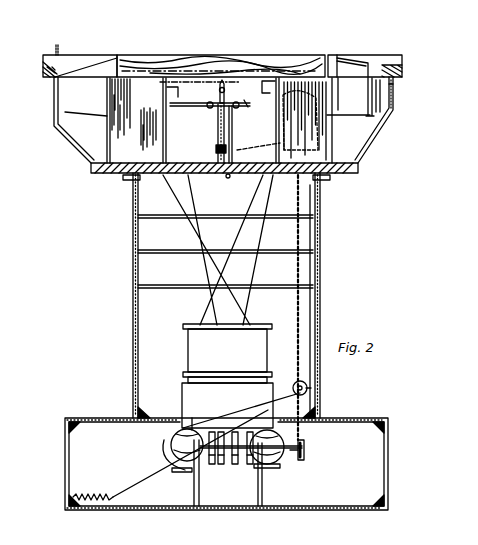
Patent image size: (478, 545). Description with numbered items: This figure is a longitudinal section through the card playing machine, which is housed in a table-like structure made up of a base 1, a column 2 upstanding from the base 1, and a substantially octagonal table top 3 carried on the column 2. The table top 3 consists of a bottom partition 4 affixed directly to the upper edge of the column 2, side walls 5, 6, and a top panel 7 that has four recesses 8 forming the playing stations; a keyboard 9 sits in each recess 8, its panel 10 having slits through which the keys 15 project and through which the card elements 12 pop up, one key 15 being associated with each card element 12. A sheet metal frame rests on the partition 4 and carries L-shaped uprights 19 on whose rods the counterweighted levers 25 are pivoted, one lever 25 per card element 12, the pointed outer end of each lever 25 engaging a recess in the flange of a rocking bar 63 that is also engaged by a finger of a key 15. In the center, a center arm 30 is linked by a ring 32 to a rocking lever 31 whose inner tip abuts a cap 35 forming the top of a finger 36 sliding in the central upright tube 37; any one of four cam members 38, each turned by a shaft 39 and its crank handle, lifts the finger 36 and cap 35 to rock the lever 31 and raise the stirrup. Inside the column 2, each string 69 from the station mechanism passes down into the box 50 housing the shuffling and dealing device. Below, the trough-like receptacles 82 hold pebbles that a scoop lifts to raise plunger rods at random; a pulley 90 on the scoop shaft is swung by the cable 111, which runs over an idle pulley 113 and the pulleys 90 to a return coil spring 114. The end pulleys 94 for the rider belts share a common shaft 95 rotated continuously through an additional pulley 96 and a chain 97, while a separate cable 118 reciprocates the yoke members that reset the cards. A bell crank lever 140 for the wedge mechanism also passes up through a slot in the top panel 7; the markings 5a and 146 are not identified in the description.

The base 1 is at (390, 458).
The column 2 is at (322, 262).
The table top 3 is at (403, 103).
The bottom partition 4 is at (352, 176).
The side wall 5 is at (373, 147).
The partition 5a is at (258, 140).
The side wall 6 is at (394, 92).
The top panel 7 is at (305, 55).
The recess 8 is at (386, 54).
The keyboard 9 is at (368, 60).
The panel 10 is at (346, 56).
The card element 12 is at (340, 65).
The key 15 is at (393, 77).
The upright 19 is at (160, 125).
The lever 25 is at (84, 113).
The center arm 30 is at (282, 77).
The rocking lever 31 is at (240, 82).
The ring 32 is at (263, 82).
The cap 35 is at (218, 91).
The finger 36 is at (218, 139).
The central upright tube 37 is at (218, 124).
The cam member 38 is at (234, 116).
The shaft 39 is at (247, 106).
The box 50 is at (190, 357).
The rocking bar 63 is at (393, 108).
The string 69 is at (212, 270).
The trough-like receptacle 82 is at (167, 457).
The pulley 90 is at (175, 434).
The end pulley 94 is at (250, 465).
The shaft 95 is at (297, 463).
The pulley 96 is at (308, 450).
The chain 97 is at (302, 227).
The cable 111 is at (312, 297).
The idle pulley 113 is at (307, 388).
The return coil spring 114 is at (100, 500).
The cable 118 is at (247, 183).
The bell crank lever 140 is at (464, 70).
The element 146 is at (466, 53).